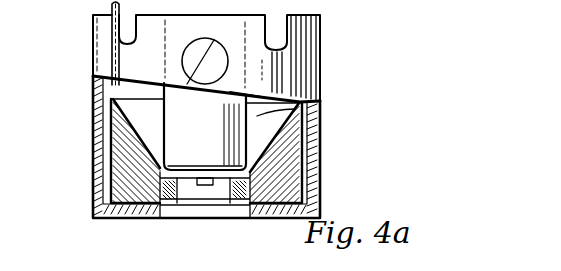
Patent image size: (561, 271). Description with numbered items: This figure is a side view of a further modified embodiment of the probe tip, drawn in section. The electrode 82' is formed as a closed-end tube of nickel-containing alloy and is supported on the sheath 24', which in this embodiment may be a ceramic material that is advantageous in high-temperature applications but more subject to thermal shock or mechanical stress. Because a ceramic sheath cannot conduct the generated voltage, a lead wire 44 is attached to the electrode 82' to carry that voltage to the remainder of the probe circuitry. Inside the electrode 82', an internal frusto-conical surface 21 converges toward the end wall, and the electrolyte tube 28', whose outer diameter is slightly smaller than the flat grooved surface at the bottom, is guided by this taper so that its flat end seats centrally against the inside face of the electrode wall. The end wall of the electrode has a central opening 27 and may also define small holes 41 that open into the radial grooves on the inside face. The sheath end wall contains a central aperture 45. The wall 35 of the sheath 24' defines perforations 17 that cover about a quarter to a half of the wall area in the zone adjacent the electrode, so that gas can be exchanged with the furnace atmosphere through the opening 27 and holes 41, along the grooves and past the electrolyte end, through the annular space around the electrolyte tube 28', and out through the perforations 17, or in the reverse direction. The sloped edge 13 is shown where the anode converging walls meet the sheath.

The sloped base edge of piston body 13 is at (315, 98).
The perforations 17 is at (201, 84).
The frusto-conical surface 21 is at (150, 121).
The sheath 24' is at (231, 57).
The central opening 27 is at (225, 191).
The electrolyte tube 28' is at (108, 151).
The wall 35 is at (320, 32).
The holes 41 is at (157, 219).
The lead wire 44 is at (116, 94).
The central aperture 45 is at (218, 208).
The electrode 82' is at (306, 153).